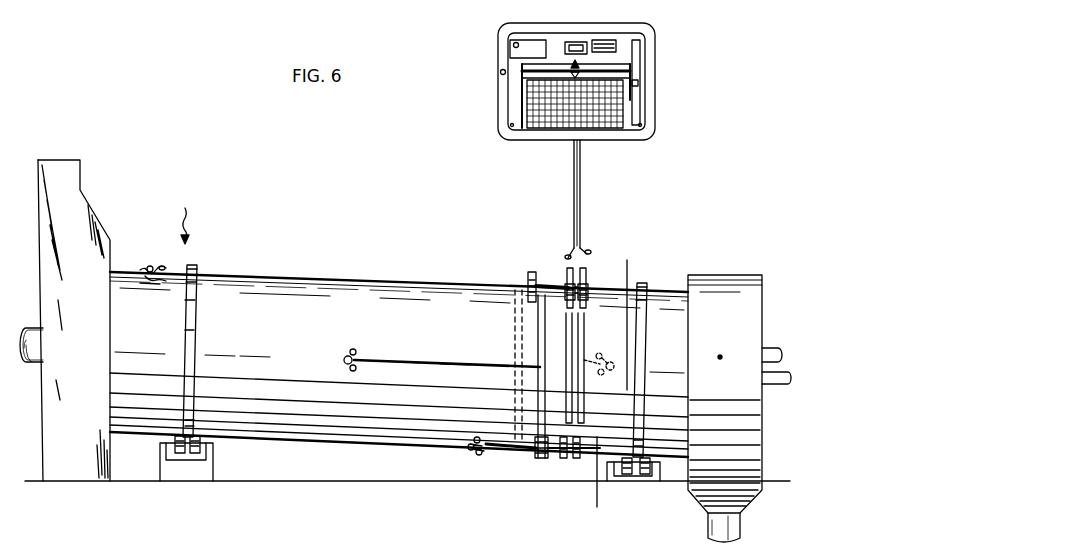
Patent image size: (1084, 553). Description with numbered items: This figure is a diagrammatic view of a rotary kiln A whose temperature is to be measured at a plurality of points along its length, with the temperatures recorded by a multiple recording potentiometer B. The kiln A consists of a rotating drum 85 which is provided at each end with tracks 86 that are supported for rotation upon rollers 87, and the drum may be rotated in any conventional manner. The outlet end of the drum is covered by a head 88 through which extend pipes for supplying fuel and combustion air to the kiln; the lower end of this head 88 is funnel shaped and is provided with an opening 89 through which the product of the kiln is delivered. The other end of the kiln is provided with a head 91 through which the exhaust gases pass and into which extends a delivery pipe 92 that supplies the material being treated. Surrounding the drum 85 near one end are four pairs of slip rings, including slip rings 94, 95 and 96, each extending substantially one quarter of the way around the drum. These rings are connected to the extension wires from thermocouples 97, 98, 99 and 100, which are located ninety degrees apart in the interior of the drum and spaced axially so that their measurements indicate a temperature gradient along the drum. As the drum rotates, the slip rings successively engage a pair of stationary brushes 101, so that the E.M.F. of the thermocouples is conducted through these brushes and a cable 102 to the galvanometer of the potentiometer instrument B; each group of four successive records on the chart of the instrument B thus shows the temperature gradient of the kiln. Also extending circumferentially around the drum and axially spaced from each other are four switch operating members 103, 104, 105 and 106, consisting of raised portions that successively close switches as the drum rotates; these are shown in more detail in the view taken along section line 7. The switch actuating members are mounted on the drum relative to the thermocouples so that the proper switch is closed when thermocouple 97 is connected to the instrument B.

The rotating drum 85 is at (328, 277).
The tracks 86 is at (196, 320).
The rollers 87 is at (193, 462).
The head 88 is at (718, 280).
The opening 89 is at (742, 520).
The head 91 is at (88, 213).
The delivery pipe 92 is at (34, 328).
The slip rings 94 is at (576, 458).
The slip rings 95 is at (567, 346).
The slip rings 96 is at (588, 298).
The thermocouple 97 is at (610, 362).
The thermocouple 98 is at (486, 454).
The thermocouple 99 is at (348, 358).
The thermocouple 100 is at (142, 268).
The stationary brushes 101 is at (565, 268).
The cable 102 is at (574, 180).
The switch operating member 103 is at (514, 340).
The switch operating member 104 is at (540, 460).
The switch operating member 105 is at (540, 320).
The switch operating member 106 is at (526, 276).
The section line 7- 7 is at (627, 265).
The rotary kiln A is at (184, 215).
The multiple recording potentiometer B is at (666, 72).